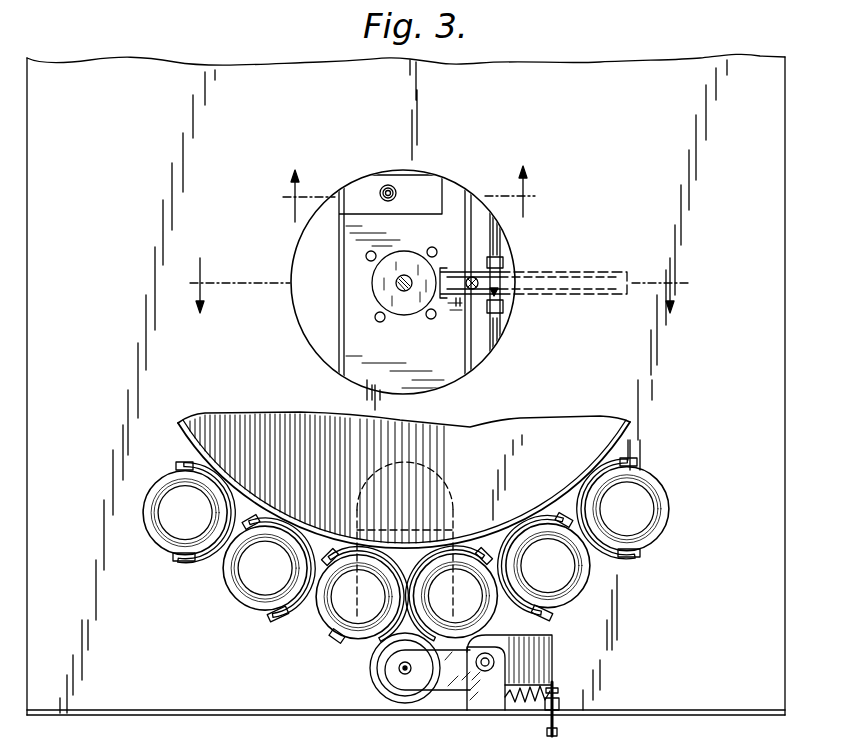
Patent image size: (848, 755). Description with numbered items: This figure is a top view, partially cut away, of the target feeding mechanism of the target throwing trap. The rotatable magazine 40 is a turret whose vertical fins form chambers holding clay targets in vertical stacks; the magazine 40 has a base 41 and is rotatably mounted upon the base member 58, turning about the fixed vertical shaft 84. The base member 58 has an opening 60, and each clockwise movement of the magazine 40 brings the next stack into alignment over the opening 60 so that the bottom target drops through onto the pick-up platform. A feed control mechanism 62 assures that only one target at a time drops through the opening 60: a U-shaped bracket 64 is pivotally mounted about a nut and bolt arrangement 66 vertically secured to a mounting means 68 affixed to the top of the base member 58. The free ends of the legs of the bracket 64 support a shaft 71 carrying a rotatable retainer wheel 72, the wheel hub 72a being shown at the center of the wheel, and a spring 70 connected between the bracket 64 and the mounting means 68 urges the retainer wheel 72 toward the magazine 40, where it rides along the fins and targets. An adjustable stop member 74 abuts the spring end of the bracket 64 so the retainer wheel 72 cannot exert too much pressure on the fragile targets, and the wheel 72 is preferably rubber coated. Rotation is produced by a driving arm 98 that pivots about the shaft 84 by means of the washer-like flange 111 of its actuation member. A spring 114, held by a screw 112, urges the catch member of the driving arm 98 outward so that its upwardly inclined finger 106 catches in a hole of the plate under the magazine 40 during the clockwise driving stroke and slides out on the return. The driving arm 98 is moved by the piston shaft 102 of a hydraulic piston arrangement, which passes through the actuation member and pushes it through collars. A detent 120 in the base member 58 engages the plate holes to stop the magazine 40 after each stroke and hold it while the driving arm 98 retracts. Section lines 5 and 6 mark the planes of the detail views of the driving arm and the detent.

The section line 5- 5 is at (435, 285).
The section line 6- 6 is at (407, 194).
The rotatable magazine 40 is at (213, 416).
The base 41 is at (470, 434).
The base member 58 is at (150, 708).
The opening 60 is at (340, 636).
The feed control mechanism 62 is at (445, 698).
The U-shaped bracket 64 is at (545, 652).
The nut and bolt arrangement 66 is at (486, 673).
The mounting means 68 is at (472, 692).
The spring 70 is at (525, 706).
The shaft 71 is at (402, 673).
The retainer wheel 72 is at (372, 688).
The roller pin 72a is at (392, 668).
The adjustable stop member 74 is at (562, 701).
The shaft 84 is at (403, 292).
The driving arm 98 is at (564, 264).
The piston shaft 102 is at (497, 340).
The finger 106 is at (500, 298).
The washer-like flange 111 is at (378, 278).
The screw 112 is at (470, 280).
The spring 114 is at (462, 305).
The detent 120 is at (386, 182).